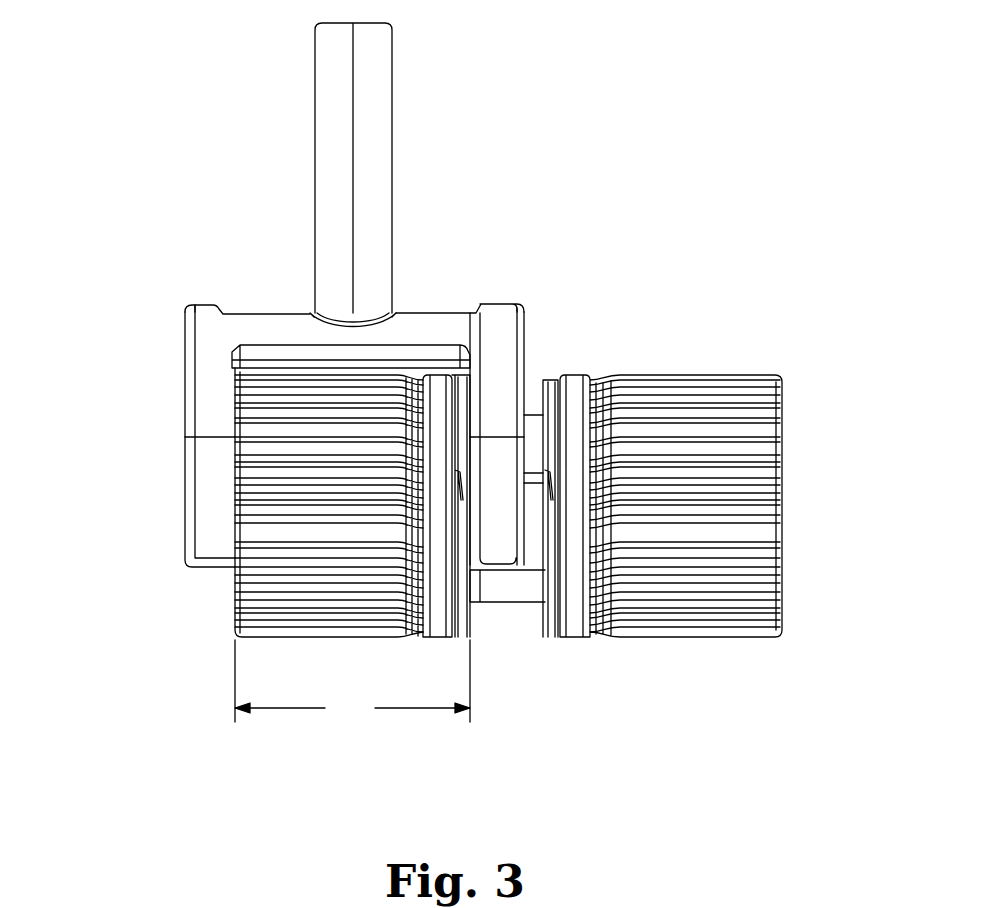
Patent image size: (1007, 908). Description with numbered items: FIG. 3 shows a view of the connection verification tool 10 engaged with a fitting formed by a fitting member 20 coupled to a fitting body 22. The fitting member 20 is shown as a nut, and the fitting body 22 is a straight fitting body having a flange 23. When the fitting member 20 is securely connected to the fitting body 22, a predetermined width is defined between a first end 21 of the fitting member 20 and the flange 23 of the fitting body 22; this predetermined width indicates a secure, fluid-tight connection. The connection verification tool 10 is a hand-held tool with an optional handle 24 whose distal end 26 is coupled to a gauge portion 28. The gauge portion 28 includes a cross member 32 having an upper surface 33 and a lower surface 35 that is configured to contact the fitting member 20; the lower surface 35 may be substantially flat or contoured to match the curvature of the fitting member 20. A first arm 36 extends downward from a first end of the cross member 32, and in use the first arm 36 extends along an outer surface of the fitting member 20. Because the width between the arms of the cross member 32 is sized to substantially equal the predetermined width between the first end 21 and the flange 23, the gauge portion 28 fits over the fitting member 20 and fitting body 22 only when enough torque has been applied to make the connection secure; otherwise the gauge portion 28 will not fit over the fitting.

The connection verification tool 10 is at (493, 66).
The fitting member 20 is at (235, 603).
The first end 21 is at (234, 628).
The fitting body 22 is at (515, 612).
The flange 23 is at (468, 638).
The handle 24 is at (395, 150).
The distal end 26 is at (393, 311).
The gauge portion 28 is at (553, 342).
The cross member 32 is at (522, 303).
The upper surface 33 is at (248, 313).
The lower surface 35 is at (287, 358).
The first arm 36 is at (205, 350).